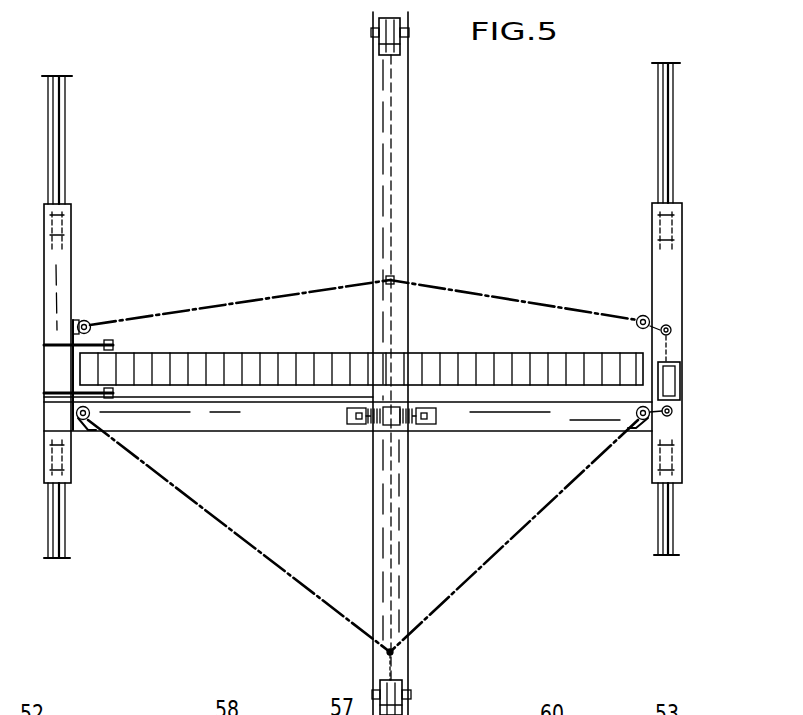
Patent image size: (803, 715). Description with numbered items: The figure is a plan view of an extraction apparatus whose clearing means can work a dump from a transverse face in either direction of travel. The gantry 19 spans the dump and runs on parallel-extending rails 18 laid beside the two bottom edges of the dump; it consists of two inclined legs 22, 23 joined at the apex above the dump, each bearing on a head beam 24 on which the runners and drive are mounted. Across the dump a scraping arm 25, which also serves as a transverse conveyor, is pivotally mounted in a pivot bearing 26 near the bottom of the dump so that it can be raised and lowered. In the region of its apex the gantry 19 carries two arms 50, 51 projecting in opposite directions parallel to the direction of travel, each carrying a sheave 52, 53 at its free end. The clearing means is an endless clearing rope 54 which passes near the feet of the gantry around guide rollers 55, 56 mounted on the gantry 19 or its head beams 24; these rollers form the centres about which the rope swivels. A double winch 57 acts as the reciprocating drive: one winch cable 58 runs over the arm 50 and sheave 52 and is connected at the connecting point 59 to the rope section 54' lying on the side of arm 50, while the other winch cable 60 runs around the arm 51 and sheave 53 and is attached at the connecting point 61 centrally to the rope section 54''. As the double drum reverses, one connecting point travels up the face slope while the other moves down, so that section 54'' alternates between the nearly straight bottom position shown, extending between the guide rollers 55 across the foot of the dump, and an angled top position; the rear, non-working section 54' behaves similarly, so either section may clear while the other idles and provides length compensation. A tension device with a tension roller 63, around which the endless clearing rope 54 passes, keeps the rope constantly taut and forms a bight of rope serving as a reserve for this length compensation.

The rails 18 is at (672, 122).
The gantry 19 is at (280, 438).
The inclined leg 22 is at (192, 432).
The inclined leg 23 is at (502, 432).
The head beam 24 is at (60, 266).
The scraping arm 25 is at (262, 352).
The pivot bearing 26 is at (115, 352).
The arm 50 is at (378, 510).
The arm 51 is at (410, 172).
The sheave 52 is at (402, 697).
The sheave 53 is at (378, 46).
The endless clearing rope 54 is at (239, 536).
The clearing rope section 54' is at (458, 539).
The clearing rope section 54'' is at (363, 279).
The guide roller 55 is at (88, 322).
The guide roller 56 is at (83, 420).
The double winch 57 is at (393, 416).
The winch cable 58 is at (410, 553).
The connecting point 59 is at (394, 652).
The winch cable 60 is at (384, 180).
The connecting point 61 is at (394, 278).
The tension roller 63 is at (682, 380).